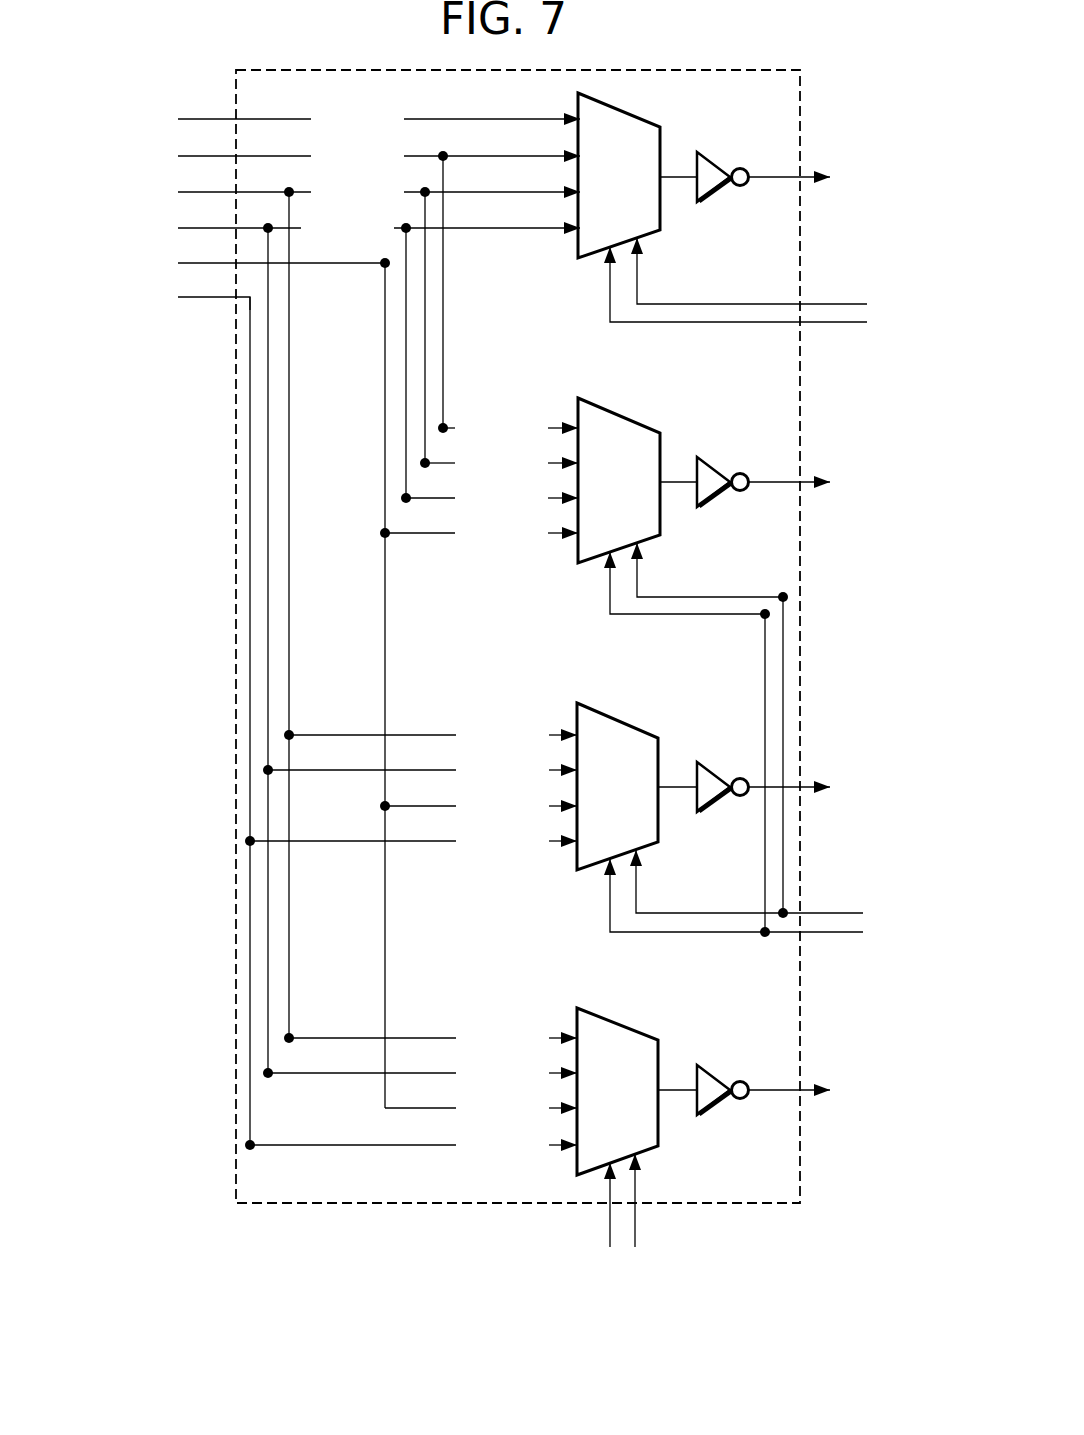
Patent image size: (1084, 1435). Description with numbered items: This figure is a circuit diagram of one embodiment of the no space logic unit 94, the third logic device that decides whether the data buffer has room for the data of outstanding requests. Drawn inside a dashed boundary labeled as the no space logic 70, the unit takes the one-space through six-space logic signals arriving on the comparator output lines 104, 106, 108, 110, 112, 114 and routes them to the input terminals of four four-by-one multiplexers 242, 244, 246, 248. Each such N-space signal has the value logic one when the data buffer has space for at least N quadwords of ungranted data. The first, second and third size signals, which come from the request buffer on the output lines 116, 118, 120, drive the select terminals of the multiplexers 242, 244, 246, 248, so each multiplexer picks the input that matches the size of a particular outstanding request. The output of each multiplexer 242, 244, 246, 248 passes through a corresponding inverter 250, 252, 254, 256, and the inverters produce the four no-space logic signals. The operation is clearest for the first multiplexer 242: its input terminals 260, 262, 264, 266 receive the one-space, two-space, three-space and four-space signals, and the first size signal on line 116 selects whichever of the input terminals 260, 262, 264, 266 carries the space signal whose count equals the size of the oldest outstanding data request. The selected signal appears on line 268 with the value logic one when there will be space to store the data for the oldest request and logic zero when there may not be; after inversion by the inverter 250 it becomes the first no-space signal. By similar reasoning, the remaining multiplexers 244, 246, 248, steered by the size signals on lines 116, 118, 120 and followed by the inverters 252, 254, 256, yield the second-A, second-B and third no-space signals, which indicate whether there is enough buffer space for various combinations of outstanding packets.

The no space logic 70 is at (511, 681).
The no space logic unit 94 is at (305, 1191).
The line 104 is at (229, 127).
The line 106 is at (229, 163).
The line 108 is at (229, 199).
The line 110 is at (229, 235).
The line 112 is at (229, 270).
The line 114 is at (229, 304).
The output line 116 is at (851, 303).
The output line 118 is at (851, 913).
The output line 120 is at (624, 1232).
The multiplexer 242 is at (656, 186).
The multiplexer 244 is at (656, 492).
The multiplexer 246 is at (652, 799).
The multiplexer 248 is at (652, 1101).
The inverter 250 is at (722, 158).
The inverter 252 is at (722, 462).
The inverter 254 is at (722, 767).
The inverter 256 is at (722, 1070).
The input terminal 260 is at (527, 127).
The input terminal 262 is at (527, 163).
The input terminal 264 is at (527, 199).
The input terminal 266 is at (527, 235).
The line 268 is at (684, 170).